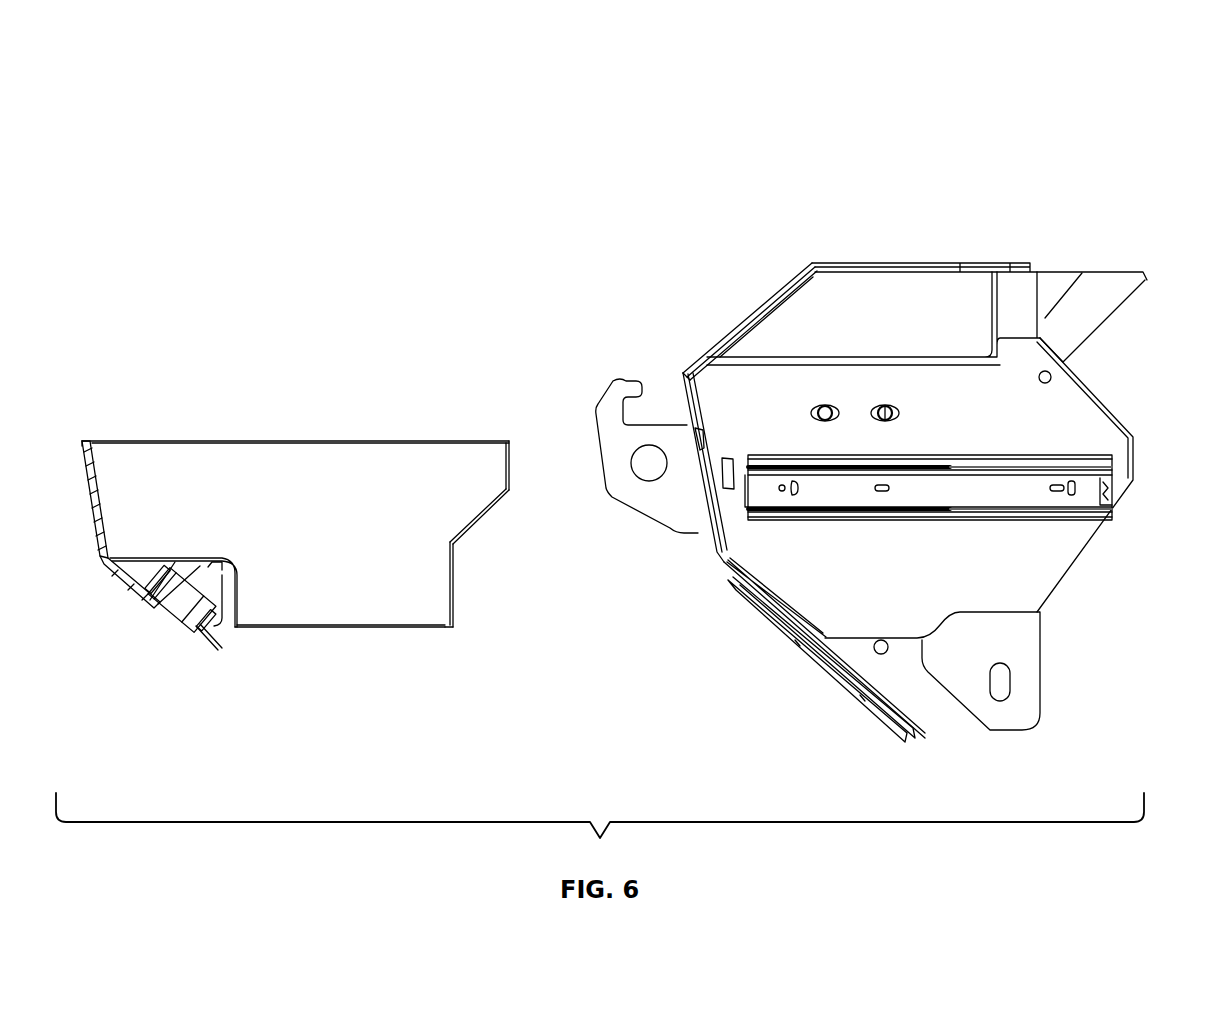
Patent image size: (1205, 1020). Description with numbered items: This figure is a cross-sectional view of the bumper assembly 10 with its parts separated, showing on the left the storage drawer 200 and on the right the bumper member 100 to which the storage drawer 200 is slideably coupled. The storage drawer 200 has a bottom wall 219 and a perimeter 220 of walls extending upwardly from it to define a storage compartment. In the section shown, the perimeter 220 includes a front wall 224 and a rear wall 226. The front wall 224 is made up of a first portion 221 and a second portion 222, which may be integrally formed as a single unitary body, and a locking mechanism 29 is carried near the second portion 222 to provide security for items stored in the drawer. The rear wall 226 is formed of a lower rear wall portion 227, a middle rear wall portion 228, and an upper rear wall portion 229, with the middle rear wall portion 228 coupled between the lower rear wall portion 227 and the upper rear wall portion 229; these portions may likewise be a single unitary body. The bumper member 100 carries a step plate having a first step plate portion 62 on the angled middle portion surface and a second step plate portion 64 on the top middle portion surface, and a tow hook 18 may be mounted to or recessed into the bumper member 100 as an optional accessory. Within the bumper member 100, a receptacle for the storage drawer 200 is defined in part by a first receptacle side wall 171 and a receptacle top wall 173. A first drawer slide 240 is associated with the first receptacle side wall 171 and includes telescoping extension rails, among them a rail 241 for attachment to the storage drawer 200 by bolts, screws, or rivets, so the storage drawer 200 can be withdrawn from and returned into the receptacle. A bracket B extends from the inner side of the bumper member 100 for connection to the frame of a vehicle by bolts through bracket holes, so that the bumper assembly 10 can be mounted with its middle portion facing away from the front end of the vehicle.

The bumper assembly 10 is at (476, 112).
The bumper member 100 is at (765, 224).
The storage drawer 200 is at (261, 330).
The perimeter 220 is at (217, 418).
The front wall 224 is at (76, 449).
The first portion 221 is at (91, 500).
The second portion 222 is at (126, 590).
The locking mechanism 29 is at (162, 640).
The bottom wall 219 is at (375, 625).
The rear wall 226 is at (470, 630).
The lower rear wall portion 227 is at (455, 606).
The middle rear wall portion 228 is at (473, 522).
The upper rear wall portion 229 is at (509, 465).
The tow hook 18 is at (610, 399).
The first step plate portion 62 is at (746, 319).
The second step plate portion 64 is at (882, 258).
The receptacle top wall 173 is at (963, 360).
The first receptacle side wall 171 is at (1080, 423).
The rail 241 is at (760, 492).
The first drawer slide 240 is at (1052, 526).
The bracket B is at (988, 720).